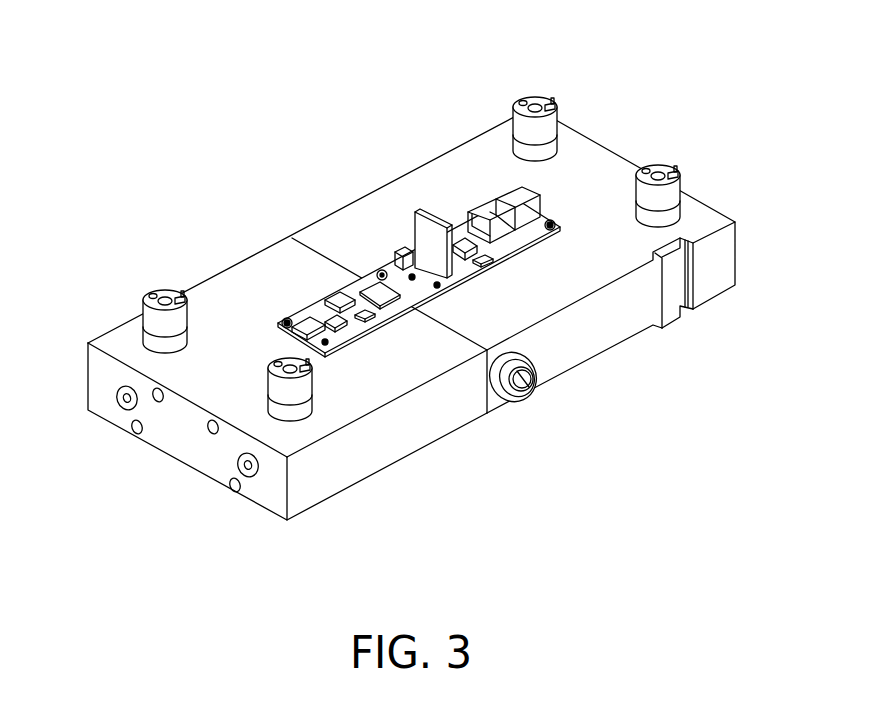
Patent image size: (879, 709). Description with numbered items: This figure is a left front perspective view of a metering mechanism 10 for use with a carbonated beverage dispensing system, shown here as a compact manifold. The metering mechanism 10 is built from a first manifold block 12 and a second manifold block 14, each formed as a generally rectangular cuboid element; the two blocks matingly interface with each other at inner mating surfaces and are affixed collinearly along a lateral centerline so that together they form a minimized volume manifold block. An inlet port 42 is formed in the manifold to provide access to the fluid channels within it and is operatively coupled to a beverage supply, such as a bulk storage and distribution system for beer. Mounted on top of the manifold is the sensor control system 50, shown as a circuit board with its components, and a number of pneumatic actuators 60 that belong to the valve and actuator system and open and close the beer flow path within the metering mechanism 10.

The metering mechanism 10 is at (389, 360).
The first manifold block 12 is at (632, 328).
The second manifold block 14 is at (355, 475).
The inlet port 42 is at (528, 396).
The sensor control system 50 is at (373, 260).
The pneumatic actuators 60 is at (555, 108).